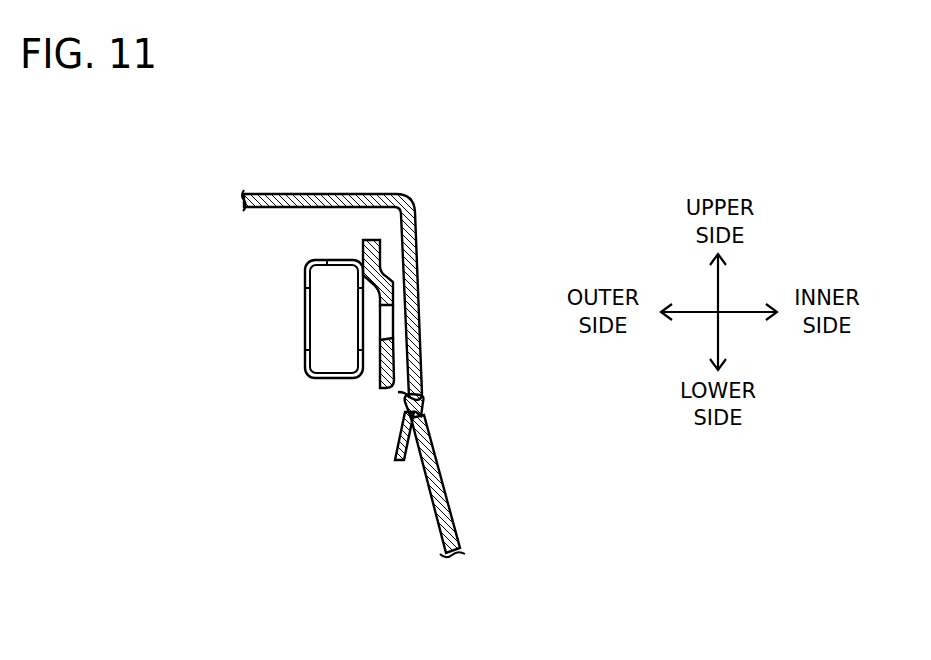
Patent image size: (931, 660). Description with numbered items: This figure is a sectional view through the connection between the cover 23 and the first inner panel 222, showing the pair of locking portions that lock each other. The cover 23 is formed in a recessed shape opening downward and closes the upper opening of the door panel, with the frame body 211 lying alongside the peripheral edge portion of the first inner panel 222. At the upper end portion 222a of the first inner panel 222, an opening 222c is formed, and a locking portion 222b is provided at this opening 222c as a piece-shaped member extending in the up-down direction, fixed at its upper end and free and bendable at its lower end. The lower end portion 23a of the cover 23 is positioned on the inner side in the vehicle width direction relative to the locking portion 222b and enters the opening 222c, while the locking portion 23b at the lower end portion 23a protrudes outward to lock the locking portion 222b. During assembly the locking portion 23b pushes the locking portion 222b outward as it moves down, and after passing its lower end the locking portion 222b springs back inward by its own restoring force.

The cover 23 is at (367, 194).
The lower end portion 23a is at (398, 450).
The locking portion 23b is at (396, 393).
The frame body 211 is at (305, 275).
The upper end portion 222a is at (380, 250).
The locking portion 222b is at (393, 359).
The opening 222c is at (420, 398).
The first inner panel 222 is at (452, 500).